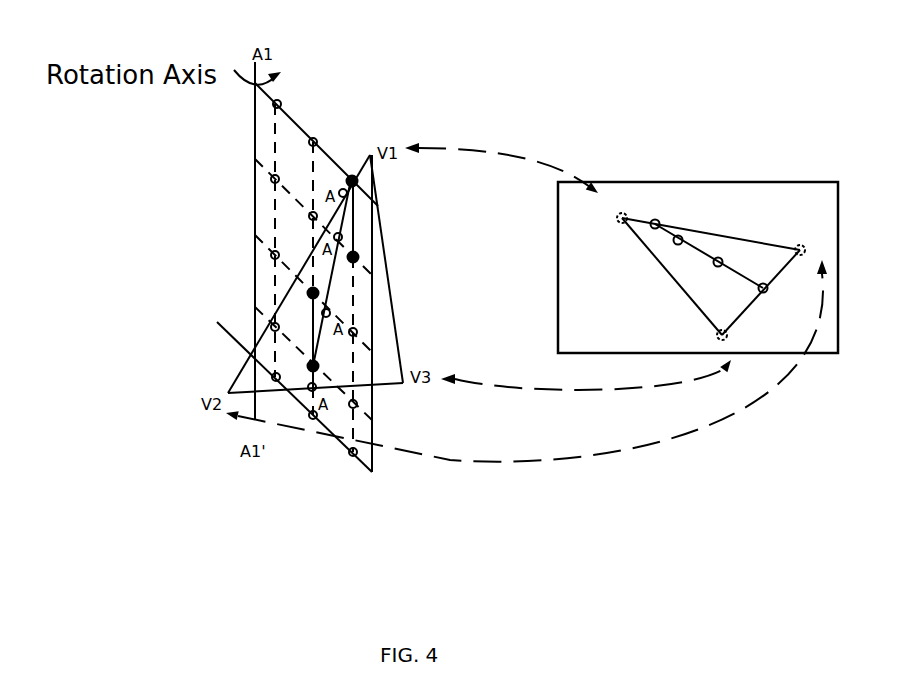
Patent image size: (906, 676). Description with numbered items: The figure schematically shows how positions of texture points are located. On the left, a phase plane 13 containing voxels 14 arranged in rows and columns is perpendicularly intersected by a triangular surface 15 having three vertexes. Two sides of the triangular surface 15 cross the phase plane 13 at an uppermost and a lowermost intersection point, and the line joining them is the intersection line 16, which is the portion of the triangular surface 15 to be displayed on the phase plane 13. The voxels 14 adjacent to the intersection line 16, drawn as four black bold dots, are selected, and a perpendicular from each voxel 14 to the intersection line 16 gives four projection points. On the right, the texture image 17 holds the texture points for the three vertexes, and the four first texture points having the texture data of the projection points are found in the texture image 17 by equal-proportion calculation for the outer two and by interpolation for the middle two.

The phase plane 13 is at (341, 144).
The voxels 14 is at (381, 293).
The triangular surface 15 is at (217, 322).
The intersection line 16 is at (388, 284).
The texture image 17 is at (698, 242).